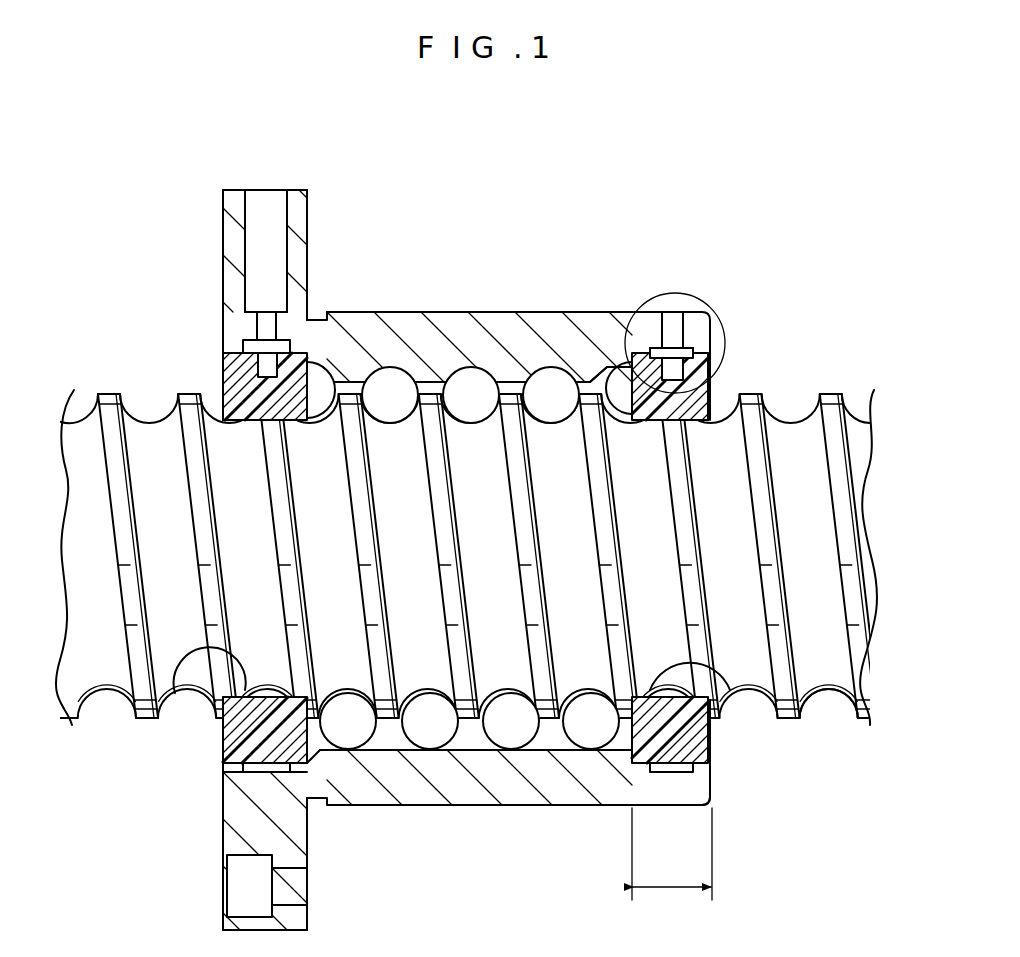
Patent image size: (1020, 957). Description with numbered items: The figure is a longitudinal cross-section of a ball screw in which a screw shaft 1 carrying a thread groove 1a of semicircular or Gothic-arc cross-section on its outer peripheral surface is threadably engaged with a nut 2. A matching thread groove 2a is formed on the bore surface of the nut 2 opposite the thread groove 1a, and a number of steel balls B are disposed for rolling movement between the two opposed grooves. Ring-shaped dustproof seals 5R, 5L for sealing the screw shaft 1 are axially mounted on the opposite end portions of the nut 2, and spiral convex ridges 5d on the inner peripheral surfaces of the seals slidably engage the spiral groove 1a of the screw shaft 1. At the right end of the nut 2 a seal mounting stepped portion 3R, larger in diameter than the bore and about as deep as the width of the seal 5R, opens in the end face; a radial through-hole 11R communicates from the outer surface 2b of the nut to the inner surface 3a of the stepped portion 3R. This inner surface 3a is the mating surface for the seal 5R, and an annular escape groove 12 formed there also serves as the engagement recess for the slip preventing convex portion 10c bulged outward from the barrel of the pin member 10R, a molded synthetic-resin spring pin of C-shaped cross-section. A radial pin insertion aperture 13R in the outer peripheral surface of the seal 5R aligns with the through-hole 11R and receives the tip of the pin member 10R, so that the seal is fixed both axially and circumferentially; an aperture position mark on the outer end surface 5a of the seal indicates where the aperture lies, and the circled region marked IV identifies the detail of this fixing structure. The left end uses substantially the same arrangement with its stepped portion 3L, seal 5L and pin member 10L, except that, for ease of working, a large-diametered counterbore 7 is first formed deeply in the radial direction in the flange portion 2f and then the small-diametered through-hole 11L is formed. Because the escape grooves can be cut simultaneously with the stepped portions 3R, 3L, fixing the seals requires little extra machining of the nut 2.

The ball screw shaft 1 is at (522, 548).
The thread groove 1a is at (828, 702).
The ball screw nut 2 is at (536, 808).
The thread groove 2a is at (432, 745).
The outer surface of the nut 2b is at (376, 311).
The flange portion 2f is at (224, 196).
The inner surface of the seal mounting stepped portion 3a is at (600, 366).
The seal mounting stepped portion 3L is at (224, 822).
The seal mounting stepped portion 3R is at (630, 794).
The dustproof seal 5L is at (250, 752).
The dustproof seal 5R is at (705, 756).
The outer end surface of the seal 5a is at (717, 384).
The spiral convex ridge 5d is at (204, 690).
The counterbore 7 is at (277, 207).
The pin member 10L is at (263, 331).
The pin member 10R is at (706, 306).
The slip preventing convex portion 10c is at (650, 340).
The through-hole 11L is at (268, 304).
The through-hole 11R is at (670, 323).
The pin insertion aperture 13R is at (713, 339).
The section line IV is at (706, 301).
The steel balls B is at (468, 376).
The escape groove 12 is at (712, 810).